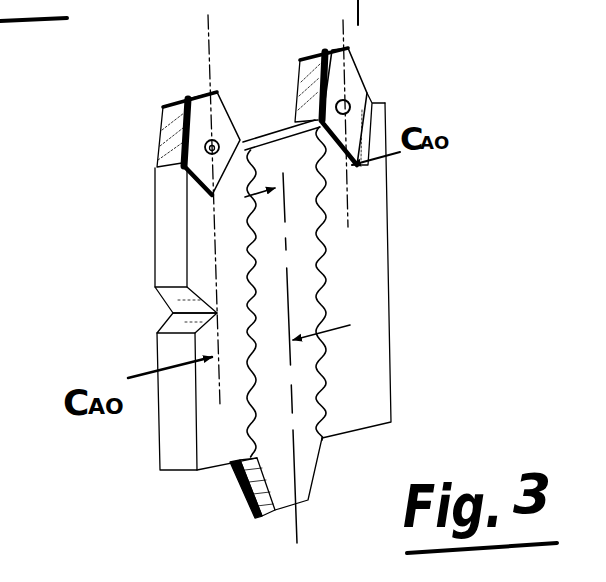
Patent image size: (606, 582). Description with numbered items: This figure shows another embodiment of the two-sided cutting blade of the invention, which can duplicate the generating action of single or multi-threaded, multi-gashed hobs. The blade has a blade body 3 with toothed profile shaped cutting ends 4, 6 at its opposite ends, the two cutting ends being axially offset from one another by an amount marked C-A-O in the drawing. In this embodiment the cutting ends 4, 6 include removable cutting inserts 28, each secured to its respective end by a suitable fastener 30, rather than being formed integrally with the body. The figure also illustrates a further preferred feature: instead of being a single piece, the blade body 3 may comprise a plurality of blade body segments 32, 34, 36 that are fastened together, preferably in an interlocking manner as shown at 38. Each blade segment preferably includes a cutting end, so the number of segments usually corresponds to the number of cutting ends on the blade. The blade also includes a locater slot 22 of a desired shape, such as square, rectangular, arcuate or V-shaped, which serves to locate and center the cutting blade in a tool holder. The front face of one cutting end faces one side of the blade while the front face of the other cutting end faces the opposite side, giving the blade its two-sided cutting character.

The blade body 3 is at (393, 182).
The cutting end 4 is at (152, 132).
The cutting end 6 is at (323, 473).
The locater slot 22 is at (163, 312).
The removable cutting insert 28 is at (366, 74).
The fastener 30 is at (352, 105).
The blade body segment 32 is at (355, 246).
The blade body segment 34 is at (300, 283).
The blade body segment 36 is at (200, 243).
The interlocking connection 38 is at (333, 388).